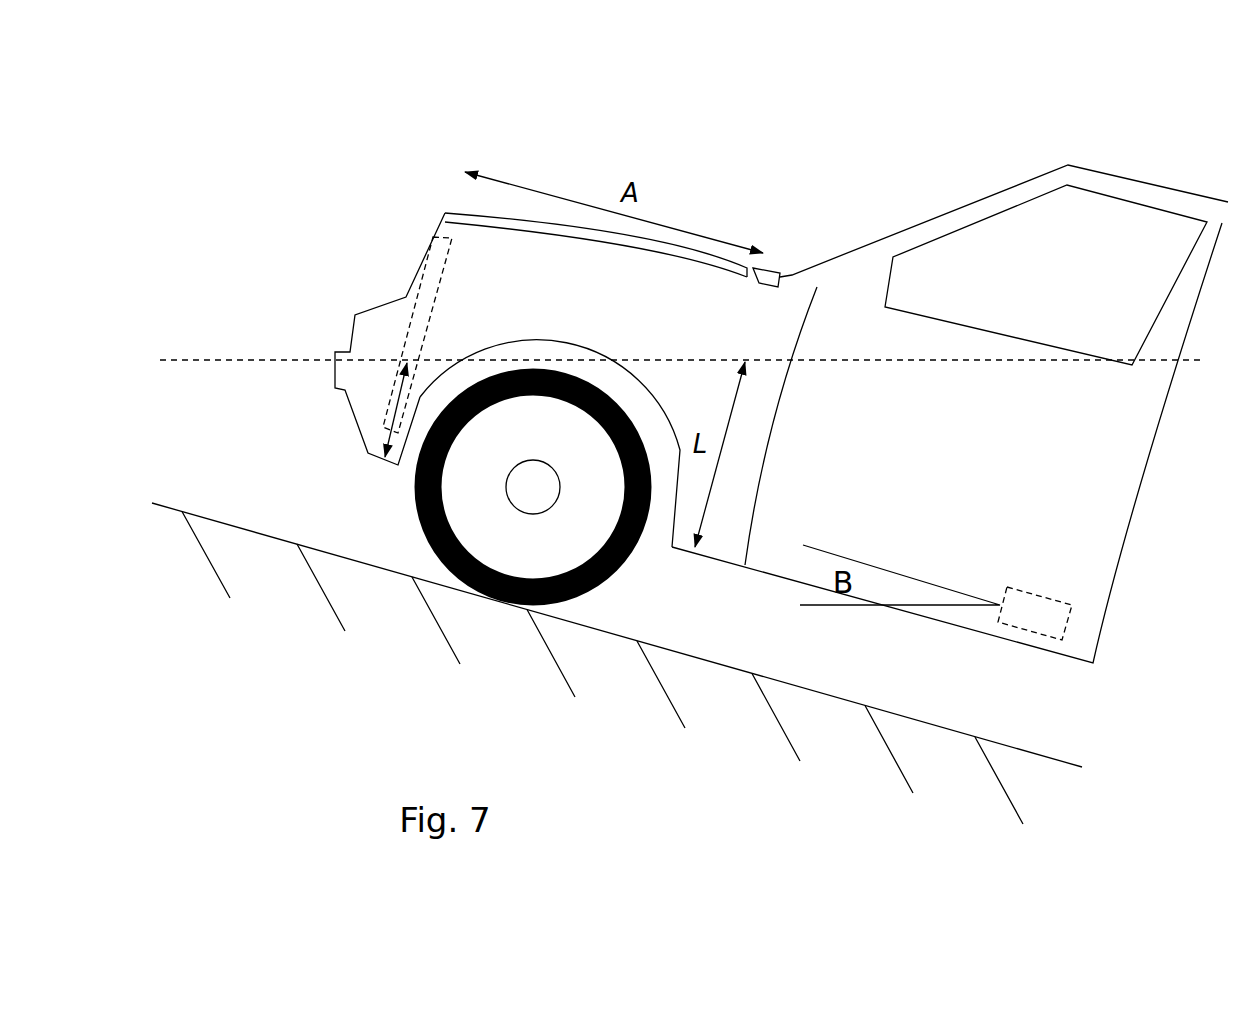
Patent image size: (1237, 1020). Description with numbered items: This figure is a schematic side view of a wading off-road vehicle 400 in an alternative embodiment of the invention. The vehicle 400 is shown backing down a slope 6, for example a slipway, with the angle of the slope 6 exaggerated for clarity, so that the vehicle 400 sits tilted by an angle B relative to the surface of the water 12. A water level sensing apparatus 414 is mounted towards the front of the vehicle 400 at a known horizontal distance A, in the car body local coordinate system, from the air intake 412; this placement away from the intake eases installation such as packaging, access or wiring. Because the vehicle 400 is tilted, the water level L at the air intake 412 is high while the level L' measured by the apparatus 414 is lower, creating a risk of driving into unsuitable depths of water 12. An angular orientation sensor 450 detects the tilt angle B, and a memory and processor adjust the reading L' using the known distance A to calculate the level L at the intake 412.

The vehicle 400 is at (513, 99).
The water 12 is at (228, 357).
The slope 6 is at (268, 542).
The apparatus 414 is at (422, 268).
The air intake 412 is at (768, 268).
The angular orientation sensor 450 is at (1018, 608).